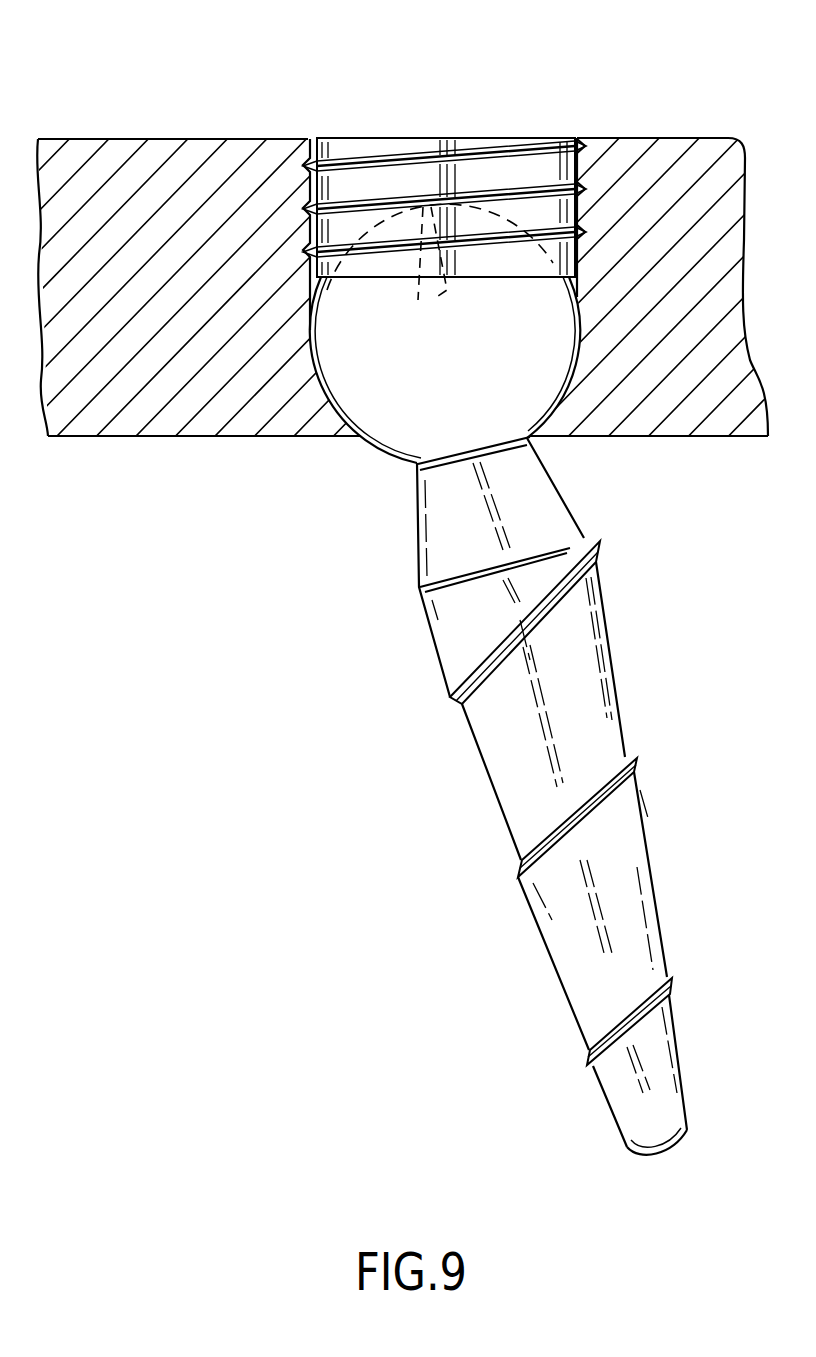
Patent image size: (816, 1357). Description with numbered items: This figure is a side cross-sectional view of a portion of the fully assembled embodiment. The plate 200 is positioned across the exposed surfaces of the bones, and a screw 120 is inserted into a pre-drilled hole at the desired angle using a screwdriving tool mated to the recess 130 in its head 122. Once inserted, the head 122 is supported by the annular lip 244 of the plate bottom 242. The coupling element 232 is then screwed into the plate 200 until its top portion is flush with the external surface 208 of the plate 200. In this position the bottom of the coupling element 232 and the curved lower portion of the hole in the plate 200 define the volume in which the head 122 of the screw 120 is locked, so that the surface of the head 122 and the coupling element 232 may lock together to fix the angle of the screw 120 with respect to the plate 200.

The screw 120 is at (445, 755).
The head 122 is at (483, 377).
The recess 130 is at (418, 300).
The plate 200 is at (210, 287).
The external surface 208 is at (173, 122).
The coupling element 232 is at (434, 122).
The plate bottom 242 is at (135, 452).
The annular lip 244 is at (533, 438).